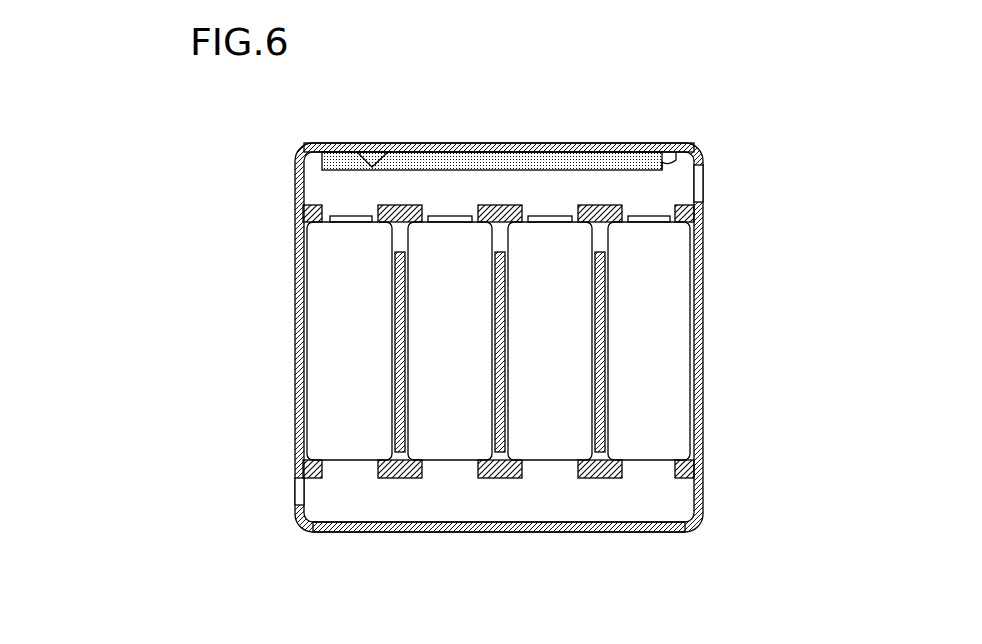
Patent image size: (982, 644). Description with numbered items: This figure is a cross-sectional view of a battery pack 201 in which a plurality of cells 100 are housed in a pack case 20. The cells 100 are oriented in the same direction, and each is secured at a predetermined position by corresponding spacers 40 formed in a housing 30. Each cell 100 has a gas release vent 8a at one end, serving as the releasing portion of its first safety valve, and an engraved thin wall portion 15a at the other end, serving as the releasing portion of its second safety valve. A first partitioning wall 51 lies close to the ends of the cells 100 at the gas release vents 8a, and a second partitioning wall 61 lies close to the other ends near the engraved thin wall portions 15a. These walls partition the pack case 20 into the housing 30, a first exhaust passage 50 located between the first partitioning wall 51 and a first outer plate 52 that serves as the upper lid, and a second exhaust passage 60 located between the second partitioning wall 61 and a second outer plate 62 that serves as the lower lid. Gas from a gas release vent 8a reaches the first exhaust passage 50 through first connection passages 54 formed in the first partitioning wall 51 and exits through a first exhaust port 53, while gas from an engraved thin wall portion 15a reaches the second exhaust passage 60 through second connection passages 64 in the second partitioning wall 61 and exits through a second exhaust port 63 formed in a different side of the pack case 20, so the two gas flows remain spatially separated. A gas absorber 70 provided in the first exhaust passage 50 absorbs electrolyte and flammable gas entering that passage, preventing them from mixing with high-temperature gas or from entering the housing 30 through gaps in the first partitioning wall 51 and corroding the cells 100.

The battery pack 201 is at (88, 90).
The pack case 20 is at (700, 303).
The housing 30 is at (556, 341).
The spacer 40 is at (603, 295).
The first exhaust passage 50 is at (498, 144).
The first partitioning wall 51 is at (412, 207).
The first outer plate 52 is at (540, 143).
The first exhaust port 53 is at (700, 177).
The first connection passage 54 is at (340, 213).
The second exhaust passage 60 is at (488, 489).
The second partitioning wall 61 is at (587, 478).
The second outer plate 62 is at (352, 527).
The second exhaust port 63 is at (298, 500).
The second connection passage 64 is at (357, 473).
The gas absorber 70 is at (560, 168).
The gas release vent 8a is at (640, 217).
The engraved thin wall portion 15a is at (638, 463).
The cell 100 is at (375, 348).